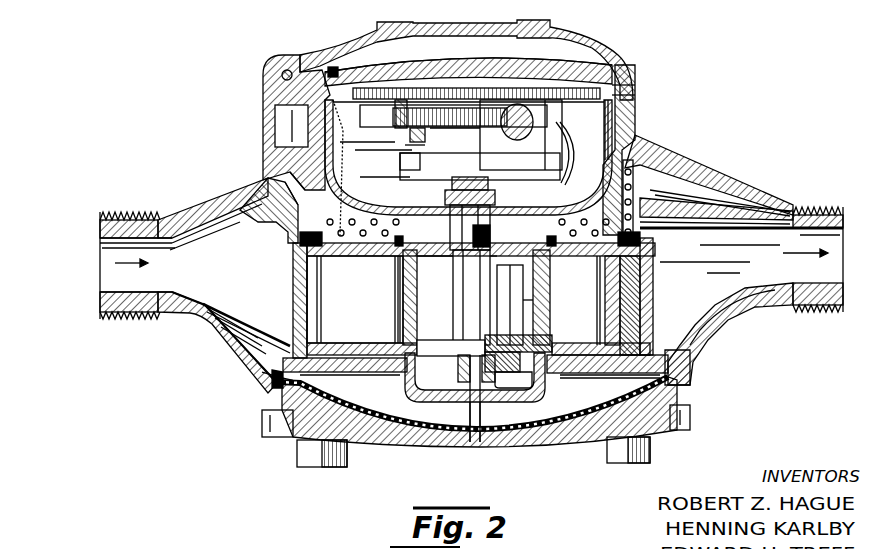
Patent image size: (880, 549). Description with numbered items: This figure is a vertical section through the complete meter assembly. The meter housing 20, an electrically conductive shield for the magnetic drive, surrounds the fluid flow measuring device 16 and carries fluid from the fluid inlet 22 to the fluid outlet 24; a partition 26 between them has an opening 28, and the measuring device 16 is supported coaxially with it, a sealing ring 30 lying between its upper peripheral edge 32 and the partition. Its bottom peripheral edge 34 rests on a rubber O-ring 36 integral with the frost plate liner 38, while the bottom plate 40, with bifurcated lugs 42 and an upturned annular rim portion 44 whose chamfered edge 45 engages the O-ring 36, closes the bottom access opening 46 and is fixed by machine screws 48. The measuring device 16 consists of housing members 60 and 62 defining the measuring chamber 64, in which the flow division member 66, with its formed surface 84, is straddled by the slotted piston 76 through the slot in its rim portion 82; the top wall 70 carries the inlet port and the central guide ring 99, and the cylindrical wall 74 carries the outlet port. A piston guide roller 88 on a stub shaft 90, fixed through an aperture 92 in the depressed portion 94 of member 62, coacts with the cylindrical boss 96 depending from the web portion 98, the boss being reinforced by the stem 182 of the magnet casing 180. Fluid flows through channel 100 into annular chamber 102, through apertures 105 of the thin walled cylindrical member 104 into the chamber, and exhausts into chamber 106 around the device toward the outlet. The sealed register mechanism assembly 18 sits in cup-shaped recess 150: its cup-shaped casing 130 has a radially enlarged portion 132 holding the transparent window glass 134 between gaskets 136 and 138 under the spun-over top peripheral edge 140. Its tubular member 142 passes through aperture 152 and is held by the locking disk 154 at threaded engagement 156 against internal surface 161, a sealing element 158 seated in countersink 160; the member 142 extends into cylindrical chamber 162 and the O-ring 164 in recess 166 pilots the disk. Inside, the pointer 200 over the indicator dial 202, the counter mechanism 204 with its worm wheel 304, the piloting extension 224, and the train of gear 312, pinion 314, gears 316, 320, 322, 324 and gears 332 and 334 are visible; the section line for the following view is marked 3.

The top peripheral edge 140 is at (622, 54).
The annular gasket 136 is at (333, 64).
The annular chamber 102 is at (276, 114).
The cup-shaped casing 130 is at (626, 142).
The register mechanism assembly 18 is at (608, 132).
The radially enlarged portion 132 is at (636, 73).
The annular gasket 138 is at (634, 92).
The apertures 105 is at (633, 172).
The thin walled cylindrical member 104 is at (646, 157).
The meter housing 20 is at (700, 168).
The sealing ring 30 is at (660, 222).
The fluid outlet 24 is at (836, 302).
The housing member 60 is at (656, 322).
The fluid flow measuring device 16 is at (658, 289).
The partition 26 is at (246, 262).
The fluid inlet 22 is at (112, 316).
The channel 100 is at (206, 206).
The upper peripheral edge 32 is at (298, 214).
The opening 28 is at (306, 204).
The cup-shaped recess 150 is at (310, 178).
The chamber 106 is at (212, 324).
The bottom access opening 46 is at (291, 348).
The cylindrical wall 74 is at (298, 284).
The flow division member 66 is at (296, 296).
The top wall 70 is at (315, 257).
The worm wheel 304 is at (552, 180).
The indicator dial 202 is at (434, 70).
The transparent window glass 134 is at (470, 60).
The pointer 200 is at (546, 62).
The piloting extension 224 is at (496, 170).
The gear 316 is at (400, 142).
The gear 320 is at (455, 128).
The gear 322 is at (430, 152).
The gear 324 is at (494, 128).
The pinion 314 is at (400, 154).
The gear 312 is at (396, 168).
The gear 334 is at (516, 122).
The gear 332 is at (520, 140).
The counter mechanism 204 is at (569, 138).
The sealing element 158 is at (445, 199).
The countersink 160 is at (470, 227).
The aperture 152 is at (423, 290).
The threaded engagement 156 is at (456, 272).
The annular cylindrical recess 166 is at (552, 258).
The formed surface 84 is at (364, 308).
The O-ring 164 is at (380, 256).
The locking disk 154 is at (397, 275).
The cylindrical chamber 162 is at (400, 312).
The internal surface 161 is at (456, 278).
The tubular member 142 is at (462, 318).
The casing 180 is at (541, 305).
The web portion 98 is at (565, 342).
The central guide ring 99 is at (579, 300).
The rim portion 82 is at (606, 272).
The slotted piston 76 is at (612, 289).
The measuring chamber 64 is at (654, 266).
The depressed portion 94 is at (478, 368).
The bottom peripheral edge 34 is at (345, 380).
The cylindrical boss 96 is at (607, 375).
The housing member 62 is at (610, 386).
The piston guide roller 88 is at (462, 374).
The stem 182 is at (510, 390).
The bottom plate 40 is at (528, 448).
The frost plate liner 38 is at (356, 447).
The stub shaft 90 is at (465, 444).
The aperture 92 is at (479, 446).
The bifurcated lugs 42 is at (262, 420).
The machine screws 48 is at (297, 455).
The upturned annular rim portion 44 is at (282, 394).
The chamfered edge 45 is at (274, 384).
The O-ring 36 is at (686, 381).
The section line 3 is at (247, 250).